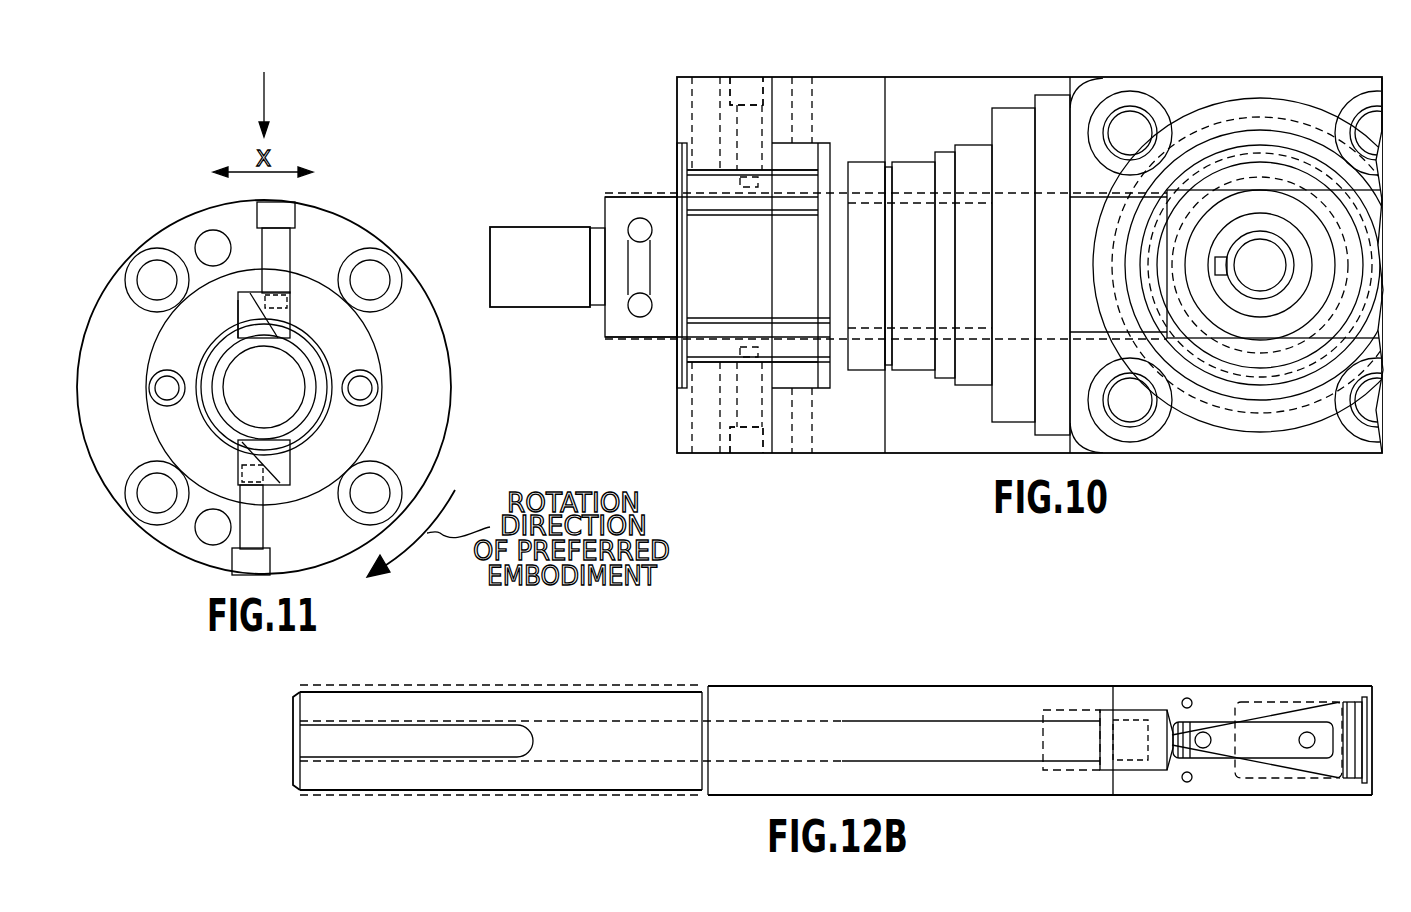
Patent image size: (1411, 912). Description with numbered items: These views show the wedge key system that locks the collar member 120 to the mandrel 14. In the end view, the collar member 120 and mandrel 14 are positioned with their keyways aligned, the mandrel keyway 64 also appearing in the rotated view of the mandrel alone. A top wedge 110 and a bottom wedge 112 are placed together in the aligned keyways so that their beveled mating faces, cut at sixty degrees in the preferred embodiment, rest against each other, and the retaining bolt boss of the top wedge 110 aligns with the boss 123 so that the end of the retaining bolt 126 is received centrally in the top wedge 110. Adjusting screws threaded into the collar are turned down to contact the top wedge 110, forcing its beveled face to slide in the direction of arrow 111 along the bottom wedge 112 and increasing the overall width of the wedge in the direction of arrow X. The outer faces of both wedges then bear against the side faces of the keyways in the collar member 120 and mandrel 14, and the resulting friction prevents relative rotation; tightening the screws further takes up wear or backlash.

In FIG. 11, the mandrel 14 is at (322, 365).
In FIG. 10, the mandrel 14 is at (677, 220).
In FIG. 12B, the keyway 64 is at (415, 737).
In FIG. 11, the top wedge 110 is at (290, 307).
In FIG. 10, the top wedge 110 is at (800, 183).
In FIG. 11, the arrow 111 is at (263, 102).
In FIG. 11, the bottom wedge 112 is at (238, 307).
In FIG. 11, the collar member 120 is at (353, 222).
In FIG. 10, the boss 123 is at (750, 95).
In FIG. 11, the retaining bolt 126 is at (282, 258).
In FIG. 10, the retaining bolt 126 is at (750, 95).